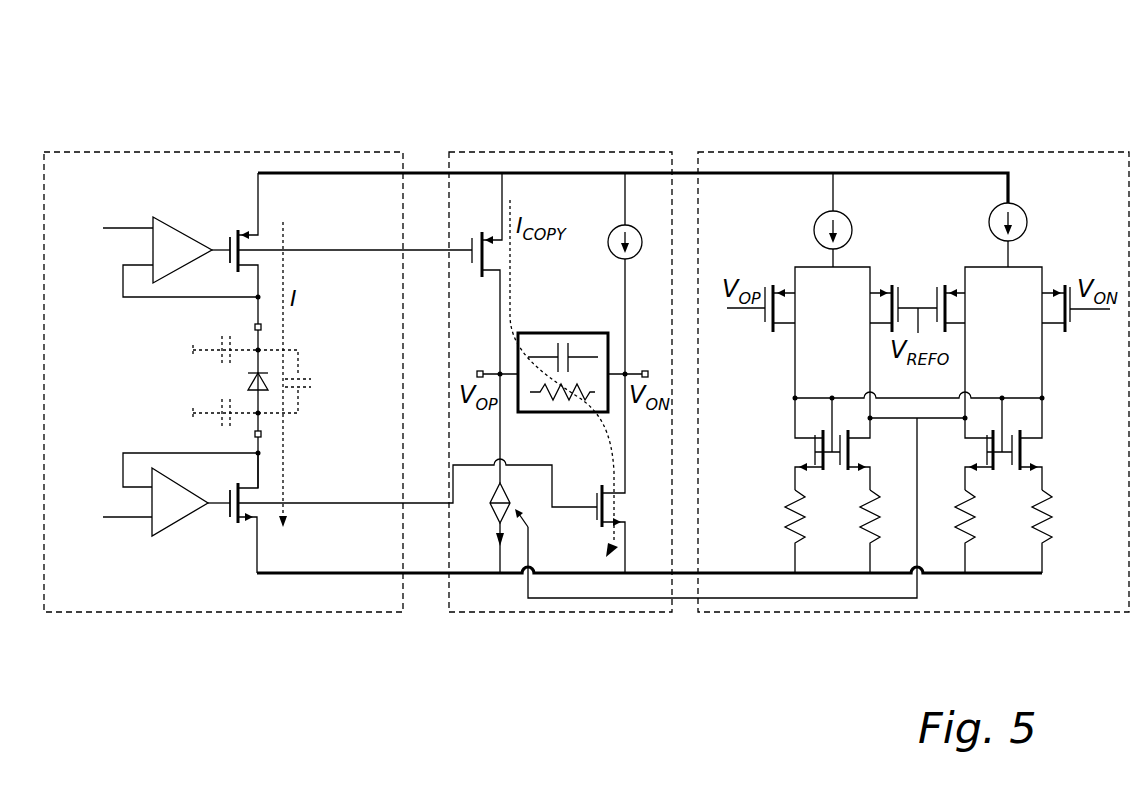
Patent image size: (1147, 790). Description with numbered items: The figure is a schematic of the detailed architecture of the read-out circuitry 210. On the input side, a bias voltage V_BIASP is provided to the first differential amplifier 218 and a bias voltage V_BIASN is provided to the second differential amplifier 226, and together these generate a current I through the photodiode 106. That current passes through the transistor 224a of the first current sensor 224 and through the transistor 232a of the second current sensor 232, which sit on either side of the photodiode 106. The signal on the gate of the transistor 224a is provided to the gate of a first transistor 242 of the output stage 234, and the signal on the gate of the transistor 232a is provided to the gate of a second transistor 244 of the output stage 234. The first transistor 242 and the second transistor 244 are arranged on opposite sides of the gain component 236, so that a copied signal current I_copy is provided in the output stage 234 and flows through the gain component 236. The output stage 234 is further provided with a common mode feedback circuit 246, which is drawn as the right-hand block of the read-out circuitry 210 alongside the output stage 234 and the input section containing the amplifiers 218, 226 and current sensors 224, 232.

The read-out circuitry 210 is at (1046, 101).
The output stage 234 is at (669, 147).
The common mode feedback circuit 246 is at (783, 152).
The first differential amplifier 218 is at (183, 238).
The first current sensor 224 is at (237, 219).
The transistor 224a is at (249, 237).
The photodiode 106 is at (247, 387).
The second differential amplifier 226 is at (185, 519).
The second current sensor 232 is at (236, 538).
The transistor 232a is at (243, 497).
The first transistor 242 is at (484, 258).
The second transistor 244 is at (607, 505).
The gain component 236 is at (572, 413).